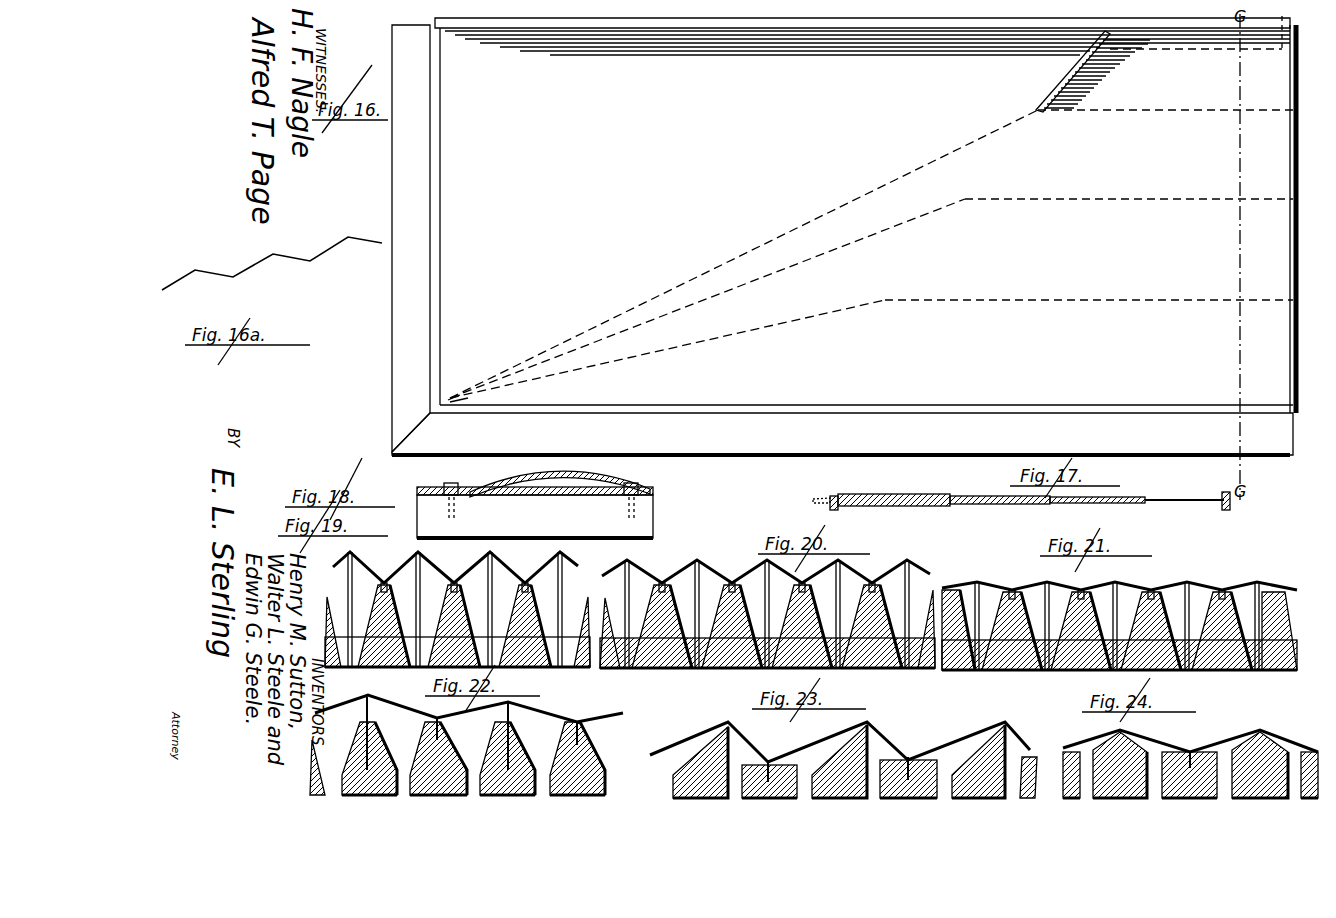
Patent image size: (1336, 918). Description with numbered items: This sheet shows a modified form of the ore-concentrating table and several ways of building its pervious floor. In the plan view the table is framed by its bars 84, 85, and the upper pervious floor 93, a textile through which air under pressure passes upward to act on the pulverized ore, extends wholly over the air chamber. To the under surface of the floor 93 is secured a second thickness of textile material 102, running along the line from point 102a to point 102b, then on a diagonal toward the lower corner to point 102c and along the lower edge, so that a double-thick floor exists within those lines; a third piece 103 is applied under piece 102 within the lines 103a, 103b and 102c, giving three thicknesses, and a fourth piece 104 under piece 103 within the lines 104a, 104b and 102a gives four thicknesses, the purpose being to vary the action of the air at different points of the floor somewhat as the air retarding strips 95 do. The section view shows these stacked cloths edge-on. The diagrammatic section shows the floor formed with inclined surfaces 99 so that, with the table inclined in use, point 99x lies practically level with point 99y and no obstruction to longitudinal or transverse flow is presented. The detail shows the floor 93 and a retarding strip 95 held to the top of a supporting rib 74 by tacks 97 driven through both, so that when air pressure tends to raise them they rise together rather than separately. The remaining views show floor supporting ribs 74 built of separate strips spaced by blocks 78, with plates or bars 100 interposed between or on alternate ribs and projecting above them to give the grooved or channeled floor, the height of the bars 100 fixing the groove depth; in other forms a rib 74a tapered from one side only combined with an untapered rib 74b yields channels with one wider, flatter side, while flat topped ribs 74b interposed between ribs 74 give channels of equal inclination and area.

In FIG. 18, the floor supporting ribs 74 is at (535, 516).
In FIG. 19, the floor supporting ribs 74 is at (457, 626).
In FIG. 20, the floor supporting ribs 74 is at (800, 669).
In FIG. 21, the floor supporting ribs 74 is at (1070, 671).
In FIG. 22, the floor supporting ribs 74 is at (344, 766).
In FIG. 24, the floor supporting ribs 74 is at (1105, 746).
In FIG. 23, the rib tapered from one side only 74a is at (698, 752).
In FIG. 23, the untapered flat topped rib 74b is at (756, 762).
In FIG. 24, the untapered flat topped rib 74b is at (1200, 750).
In FIG. 19, the spacing blocks 78 is at (340, 668).
In FIG. 20, the spacing blocks 78 is at (690, 669).
In FIG. 21, the spacing blocks 78 is at (976, 671).
In FIG. 16, the bottom frame bar 84 is at (842, 434).
In FIG. 16, the side frame bar 85 is at (411, 238).
In FIG. 16, the pervious floor 93 is at (867, 108).
In FIG. 16a, the pervious floor 93 is at (162, 291).
In FIG. 17, the pervious floor 93 is at (954, 494).
In FIG. 18, the pervious floor 93 is at (560, 463).
In FIG. 19, the pervious floor 93 is at (502, 575).
In FIG. 20, the pervious floor 93 is at (714, 568).
In FIG. 21, the pervious floor 93 is at (997, 580).
In FIG. 22, the pervious floor 93 is at (540, 712).
In FIG. 23, the pervious floor 93 is at (826, 736).
In FIG. 24, the pervious floor 93 is at (1132, 736).
In FIG. 18, the air retarding strips 95 is at (555, 470).
In FIG. 18, the tacks 97 is at (547, 491).
In FIG. 19, the tacks 97 is at (384, 583).
In FIG. 20, the tacks 97 is at (872, 583).
In FIG. 21, the tacks 97 is at (1081, 590).
In FIG. 23, the tacks 97 is at (908, 757).
In FIG. 24, the tacks 97 is at (1190, 752).
In FIG. 16a, the inclined surfaces 99 is at (274, 253).
In FIG. 16a, the upper point of inclined surface 99x is at (274, 253).
In FIG. 16a, the lower point of inclined surface 99y is at (310, 262).
In FIG. 19, the plates or bars 100 is at (347, 586).
In FIG. 20, the plates or bars 100 is at (666, 580).
In FIG. 21, the plates or bars 100 is at (975, 588).
In FIG. 22, the plates or bars 100 is at (514, 716).
In FIG. 16, the second thickness of textile material 102 is at (1148, 137).
In FIG. 17, the second thickness of textile material 102 is at (1122, 503).
In FIG. 16, the boundary point of second thickness 102a is at (1223, 236).
In FIG. 16, the boundary corner of second thickness 102b is at (1076, 71).
In FIG. 16, the lower-edge point of second thickness 102c is at (740, 256).
In FIG. 16, the third thickness of textile material 103 is at (1129, 225).
In FIG. 17, the third thickness of textile material 103 is at (1022, 504).
In FIG. 16, the boundary point of third thickness 103a is at (1319, 199).
In FIG. 16, the boundary corner of third thickness 103b is at (964, 185).
In FIG. 16, the fourth thickness of textile material 104 is at (1089, 330).
In FIG. 17, the fourth thickness of textile material 104 is at (928, 506).
In FIG. 16, the boundary point of fourth thickness 104a is at (1319, 301).
In FIG. 16, the boundary corner of fourth thickness 104b is at (880, 285).